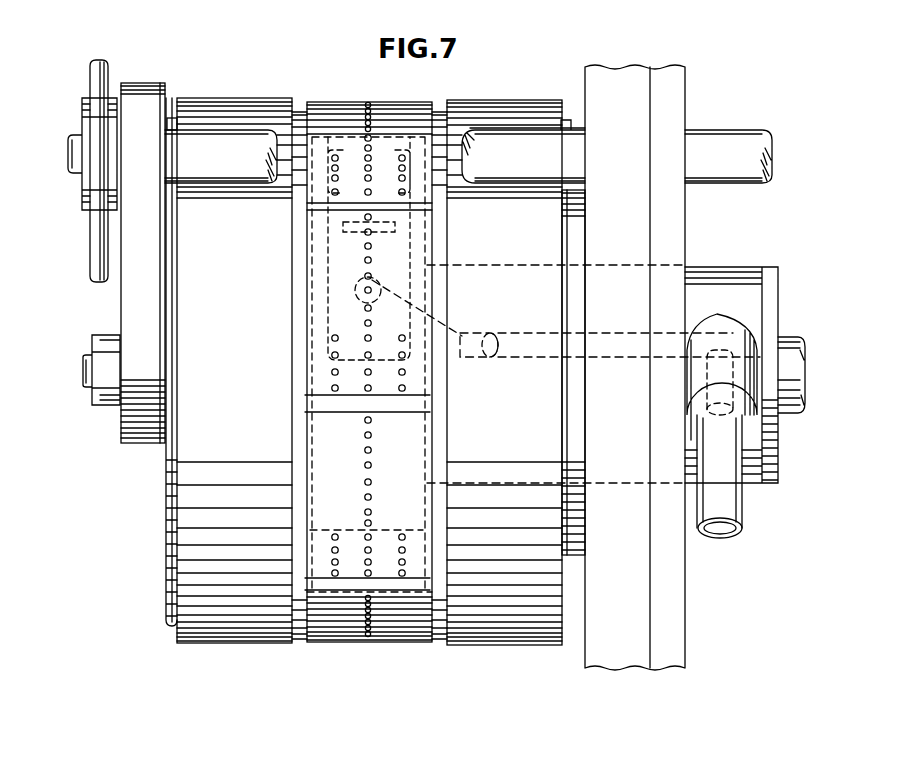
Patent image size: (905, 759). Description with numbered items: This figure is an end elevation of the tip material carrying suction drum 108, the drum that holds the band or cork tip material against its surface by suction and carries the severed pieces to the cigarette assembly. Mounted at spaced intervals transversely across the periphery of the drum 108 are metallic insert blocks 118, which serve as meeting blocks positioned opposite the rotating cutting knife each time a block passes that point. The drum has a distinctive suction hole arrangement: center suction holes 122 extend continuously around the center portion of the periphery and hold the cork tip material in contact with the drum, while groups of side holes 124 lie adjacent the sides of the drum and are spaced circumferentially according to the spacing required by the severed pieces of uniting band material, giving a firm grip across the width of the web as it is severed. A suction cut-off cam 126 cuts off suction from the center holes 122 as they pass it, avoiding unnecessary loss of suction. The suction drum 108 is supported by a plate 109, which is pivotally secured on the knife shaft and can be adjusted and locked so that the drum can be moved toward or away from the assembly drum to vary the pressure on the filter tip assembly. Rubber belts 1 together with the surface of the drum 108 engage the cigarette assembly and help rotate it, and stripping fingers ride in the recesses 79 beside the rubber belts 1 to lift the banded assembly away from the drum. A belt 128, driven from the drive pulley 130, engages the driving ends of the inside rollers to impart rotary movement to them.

The rubber belts 1 is at (255, 108).
The recesses 79 is at (307, 102).
The suction drum 108 is at (170, 118).
The plate 109 is at (622, 78).
The metallic insert blocks 118 is at (332, 203).
The center suction holes 122 is at (368, 115).
The side holes 124 is at (335, 192).
The suction cut-off cam 126 is at (395, 226).
The belt 128 is at (100, 230).
The drive pulley 130 is at (88, 118).